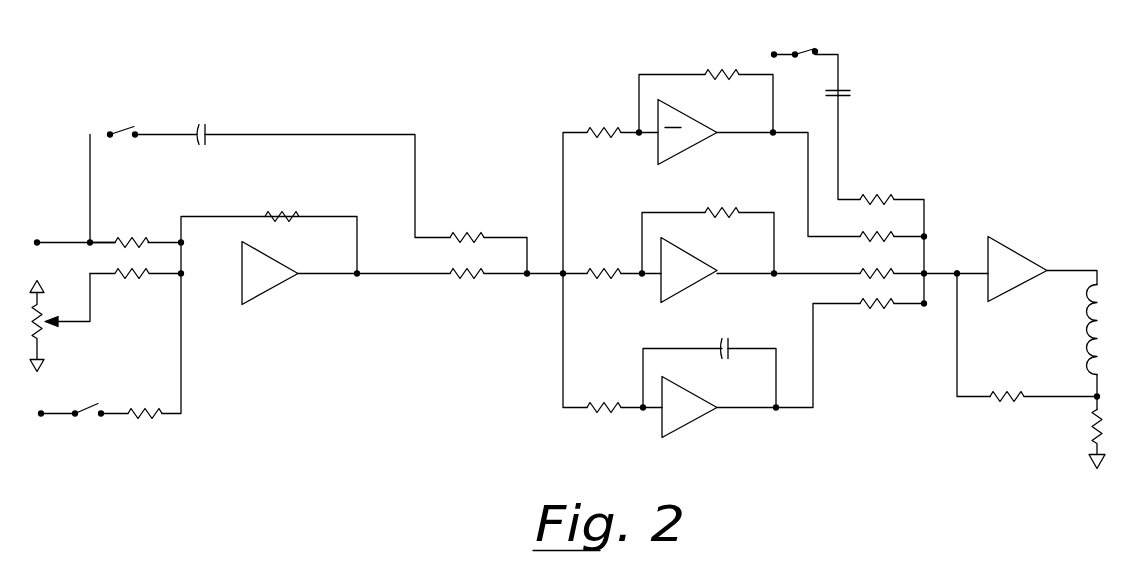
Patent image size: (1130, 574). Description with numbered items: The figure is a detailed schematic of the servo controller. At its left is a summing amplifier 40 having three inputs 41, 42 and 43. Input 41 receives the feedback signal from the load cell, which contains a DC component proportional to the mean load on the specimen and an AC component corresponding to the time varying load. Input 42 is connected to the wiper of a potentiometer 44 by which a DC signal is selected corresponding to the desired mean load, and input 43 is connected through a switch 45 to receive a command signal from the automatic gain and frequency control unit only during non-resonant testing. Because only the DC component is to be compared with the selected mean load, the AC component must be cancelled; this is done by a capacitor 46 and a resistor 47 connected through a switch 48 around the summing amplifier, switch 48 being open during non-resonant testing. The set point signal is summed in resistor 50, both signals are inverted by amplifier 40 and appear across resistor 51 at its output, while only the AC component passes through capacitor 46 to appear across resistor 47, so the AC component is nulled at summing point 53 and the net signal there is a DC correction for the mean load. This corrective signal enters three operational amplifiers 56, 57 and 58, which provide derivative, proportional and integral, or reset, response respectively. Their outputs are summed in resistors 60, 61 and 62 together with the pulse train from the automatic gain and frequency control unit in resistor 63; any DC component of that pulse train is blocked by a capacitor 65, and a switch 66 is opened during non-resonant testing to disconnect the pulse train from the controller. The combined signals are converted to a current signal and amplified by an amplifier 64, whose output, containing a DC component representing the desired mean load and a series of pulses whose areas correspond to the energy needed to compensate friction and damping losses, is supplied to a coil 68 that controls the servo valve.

The summing amplifier 40 is at (287, 281).
The input 41 is at (79, 246).
The input 42 is at (92, 324).
The input 43 is at (135, 418).
The potentiometer 44 is at (48, 326).
The switch 45 is at (82, 410).
The capacitor 46 is at (207, 124).
The resistor 47 is at (462, 233).
The switch 48 is at (118, 132).
The resistor 50 is at (141, 283).
The resistor 51 is at (464, 283).
The summing point 53 is at (526, 283).
The operational amplifier 56 is at (773, 90).
The operational amplifier 57 is at (758, 211).
The operational amplifier 58 is at (740, 346).
The resistor 60 is at (870, 244).
The resistor 61 is at (867, 276).
The resistor 62 is at (890, 306).
The resistor 63 is at (880, 200).
The amplifier 64 is at (1025, 281).
The capacitor 65 is at (850, 88).
The switch 66 is at (803, 48).
The coil 68 is at (1085, 336).